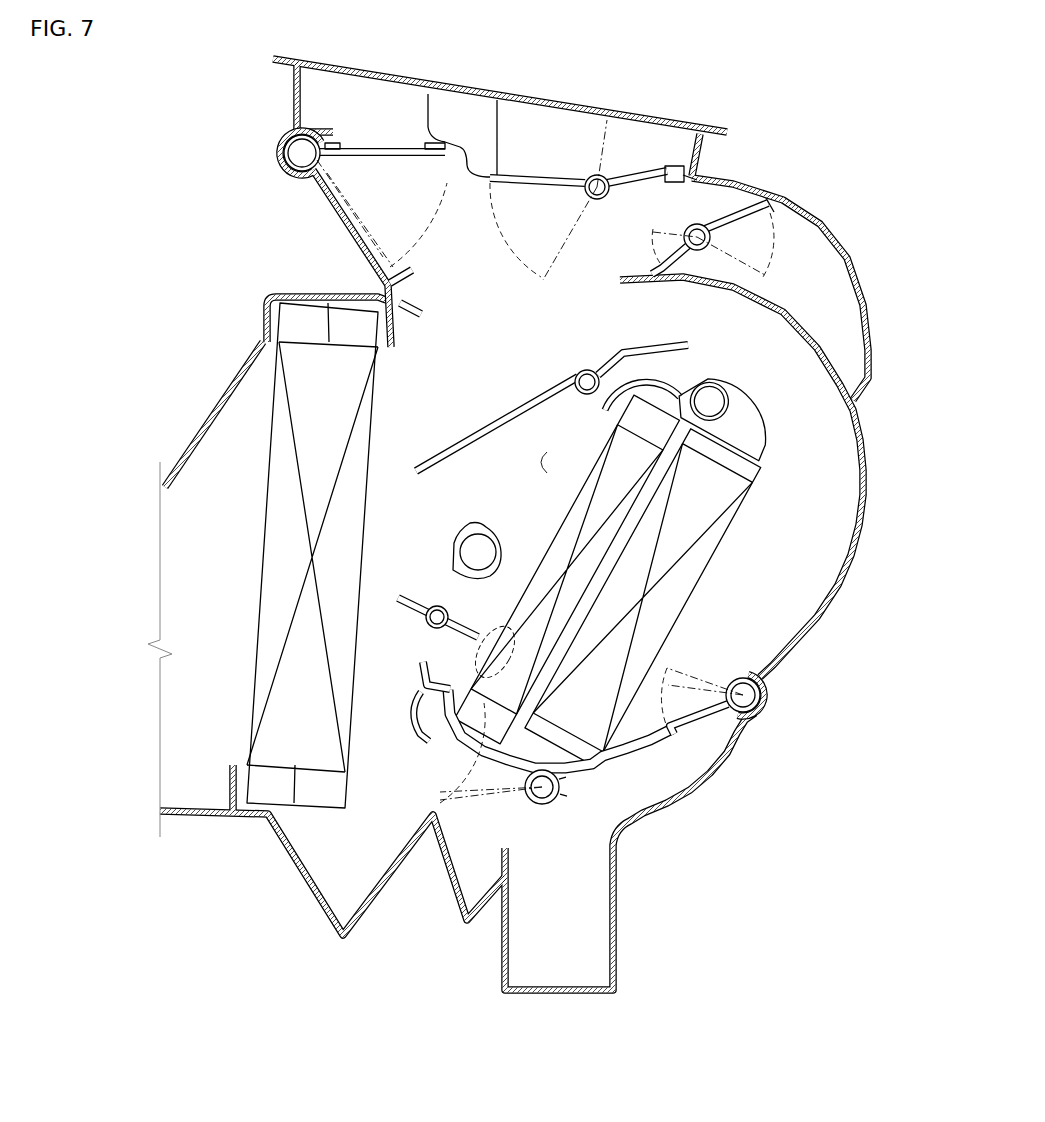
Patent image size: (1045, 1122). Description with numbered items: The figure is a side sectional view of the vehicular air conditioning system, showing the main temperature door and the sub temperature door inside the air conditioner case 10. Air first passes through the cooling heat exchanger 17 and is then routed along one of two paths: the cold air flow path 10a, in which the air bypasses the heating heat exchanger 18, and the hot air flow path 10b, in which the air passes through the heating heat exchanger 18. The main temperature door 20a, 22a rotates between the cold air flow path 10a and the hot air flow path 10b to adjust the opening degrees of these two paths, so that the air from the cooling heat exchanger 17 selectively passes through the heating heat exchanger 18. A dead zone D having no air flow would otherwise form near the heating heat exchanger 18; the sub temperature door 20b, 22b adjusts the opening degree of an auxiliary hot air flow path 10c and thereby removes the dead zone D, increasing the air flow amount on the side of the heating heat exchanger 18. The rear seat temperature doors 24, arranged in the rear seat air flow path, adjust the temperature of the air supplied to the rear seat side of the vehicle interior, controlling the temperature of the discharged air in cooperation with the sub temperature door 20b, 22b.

The air conditioner case 10 is at (856, 243).
The cold air flow path 10a is at (480, 318).
The hot air flow path 10b is at (547, 452).
The auxiliary hot air flow path 10c is at (465, 615).
The cooling heat exchanger 17 is at (277, 587).
The heating heat exchanger 18 is at (598, 688).
The main temperature door 20a is at (363, 408).
The main temperature door 22a is at (447, 450).
The sub temperature door 20b is at (254, 568).
The sub temperature door 22b is at (447, 605).
The rear seat temperature door 24 is at (700, 722).
The dead zone D is at (492, 667).